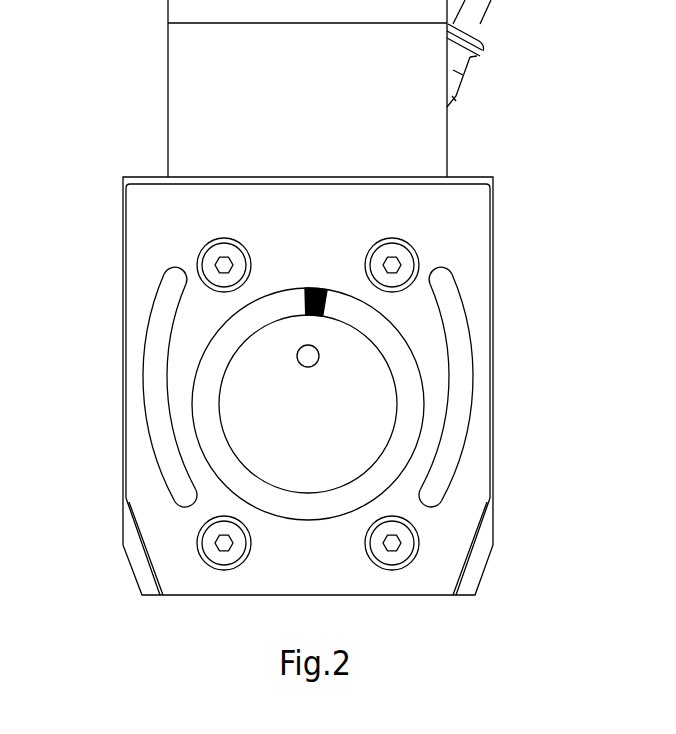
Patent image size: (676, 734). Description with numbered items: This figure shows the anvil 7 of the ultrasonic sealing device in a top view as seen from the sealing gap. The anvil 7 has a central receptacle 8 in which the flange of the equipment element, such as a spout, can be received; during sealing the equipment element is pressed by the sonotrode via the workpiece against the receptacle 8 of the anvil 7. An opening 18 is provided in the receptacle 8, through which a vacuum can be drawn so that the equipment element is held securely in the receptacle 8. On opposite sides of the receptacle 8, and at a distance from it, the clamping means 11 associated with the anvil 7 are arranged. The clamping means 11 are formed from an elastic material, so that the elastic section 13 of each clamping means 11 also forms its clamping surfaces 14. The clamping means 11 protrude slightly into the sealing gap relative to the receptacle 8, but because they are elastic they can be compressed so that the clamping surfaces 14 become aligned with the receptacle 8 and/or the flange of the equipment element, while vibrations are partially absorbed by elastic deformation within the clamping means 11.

The anvil 7 is at (470, 239).
The receptacle 8 is at (316, 440).
The clamping means 11 is at (472, 377).
The elastic section 13 is at (449, 310).
The clamping surfaces 14 is at (460, 440).
The opening 18 is at (307, 348).